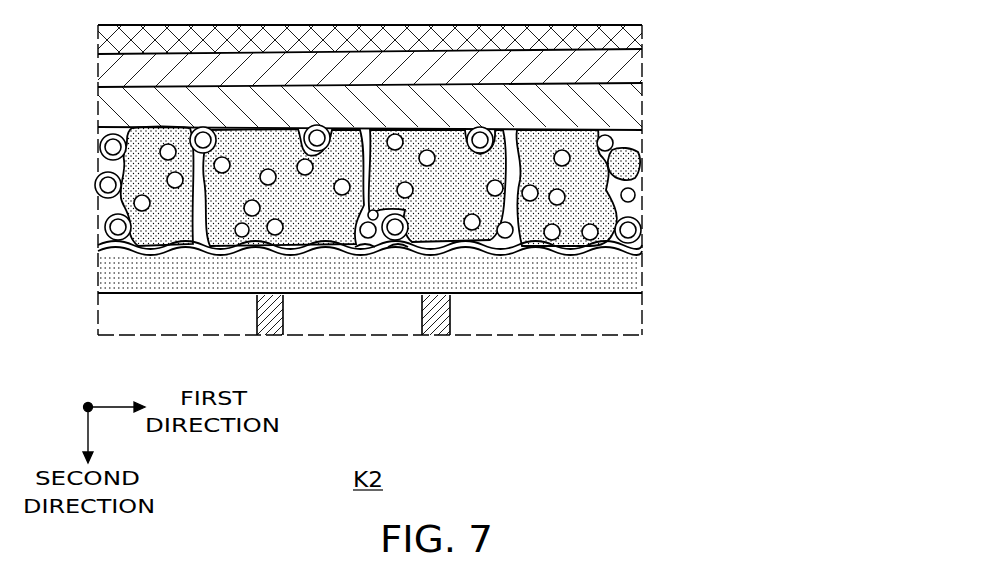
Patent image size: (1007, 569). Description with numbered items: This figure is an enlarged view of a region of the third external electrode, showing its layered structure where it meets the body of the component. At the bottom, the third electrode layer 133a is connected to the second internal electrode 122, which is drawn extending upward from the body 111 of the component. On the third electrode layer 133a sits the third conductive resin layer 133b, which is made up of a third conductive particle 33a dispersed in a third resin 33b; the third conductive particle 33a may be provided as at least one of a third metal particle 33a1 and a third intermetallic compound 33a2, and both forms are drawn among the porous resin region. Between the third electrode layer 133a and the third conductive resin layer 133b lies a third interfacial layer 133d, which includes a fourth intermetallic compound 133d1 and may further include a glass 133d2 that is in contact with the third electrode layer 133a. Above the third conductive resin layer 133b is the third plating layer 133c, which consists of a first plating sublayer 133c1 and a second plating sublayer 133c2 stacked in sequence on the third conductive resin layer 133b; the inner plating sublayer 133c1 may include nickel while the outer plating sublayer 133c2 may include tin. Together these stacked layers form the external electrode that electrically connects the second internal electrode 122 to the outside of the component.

The third plating layer 133c is at (437, 92).
The 3-2-th plating layer 133c2 is at (622, 76).
The 3-1-th plating layer 133c1 is at (620, 107).
The third conductive resin layer 133b is at (484, 187).
The third conductive particle 33a is at (445, 185).
The third metal particle 33a1 is at (610, 143).
The third intermetallic compound 33a2 is at (635, 195).
The third resin 33b is at (632, 208).
The third electrode layer 133a is at (622, 280).
The third interfacial layer 133d is at (353, 340).
The glass 133d2 is at (372, 254).
The fourth intermetallic compound 133d1 is at (396, 252).
The second internal electrode 122 is at (437, 323).
The substrate 111 is at (370, 344).